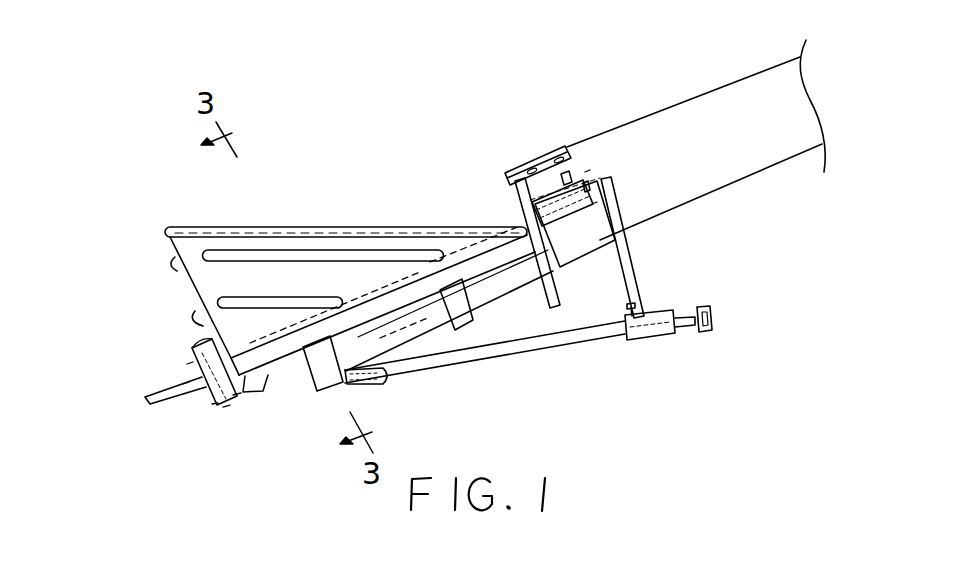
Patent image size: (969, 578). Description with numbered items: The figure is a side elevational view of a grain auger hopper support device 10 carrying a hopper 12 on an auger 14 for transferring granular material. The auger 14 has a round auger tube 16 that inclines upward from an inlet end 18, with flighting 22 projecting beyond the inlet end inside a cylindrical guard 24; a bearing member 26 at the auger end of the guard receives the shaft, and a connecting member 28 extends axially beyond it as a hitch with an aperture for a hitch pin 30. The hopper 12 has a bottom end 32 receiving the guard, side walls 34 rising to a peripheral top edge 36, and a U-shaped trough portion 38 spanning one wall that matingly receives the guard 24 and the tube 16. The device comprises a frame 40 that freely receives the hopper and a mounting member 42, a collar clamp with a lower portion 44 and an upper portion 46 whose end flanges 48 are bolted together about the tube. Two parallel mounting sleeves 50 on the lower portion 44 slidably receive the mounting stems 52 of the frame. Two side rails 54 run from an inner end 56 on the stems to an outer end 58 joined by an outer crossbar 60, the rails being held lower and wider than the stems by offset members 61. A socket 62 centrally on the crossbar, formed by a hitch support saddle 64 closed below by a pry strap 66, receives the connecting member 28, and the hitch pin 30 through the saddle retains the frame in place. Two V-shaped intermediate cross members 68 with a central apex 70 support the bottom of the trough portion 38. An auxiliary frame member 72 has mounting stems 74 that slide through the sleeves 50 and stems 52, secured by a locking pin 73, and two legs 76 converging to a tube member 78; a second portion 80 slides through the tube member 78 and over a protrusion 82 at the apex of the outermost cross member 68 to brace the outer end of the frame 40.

The grain auger hopper support device 10 is at (633, 412).
The hopper 12 is at (188, 280).
The auger 14 is at (704, 100).
The auger tube 16 is at (760, 171).
The inlet end 18 is at (433, 147).
The flighting 22 is at (334, 279).
The guard 24 is at (292, 276).
The bearing member 26 is at (200, 340).
The connecting member 28 is at (197, 398).
The hitch pin 30 is at (160, 375).
The bottom end 32 is at (258, 395).
The side walls 34 is at (226, 278).
The peripheral top edge 36 is at (351, 228).
The trough portion 38 is at (406, 333).
The frame 40 is at (464, 255).
The mounting member 42 is at (560, 110).
The lower portion 44 is at (580, 248).
The upper portion 46 is at (535, 148).
The end flanges 48 is at (567, 145).
The mounting sleeves 50 is at (548, 189).
The mounting stems 52 is at (517, 187).
The side rails 54 is at (303, 403).
The inner end 56 is at (533, 320).
The outer end 58 is at (237, 396).
The outer crossbar 60 is at (226, 406).
The offset members 61 is at (521, 247).
The socket 62 is at (187, 364).
The hitch support saddle 64 is at (183, 384).
The pry strap 66 is at (215, 404).
The intermediate cross members 68 is at (315, 398).
The central apex 70 is at (325, 393).
The auxiliary frame member 72 is at (686, 364).
The locking pin 73 is at (592, 204).
The mounting stems 74 is at (585, 172).
The legs 76 is at (627, 247).
The tube member 78 is at (670, 333).
The second portion 80 is at (582, 342).
The protrusion 82 is at (384, 380).